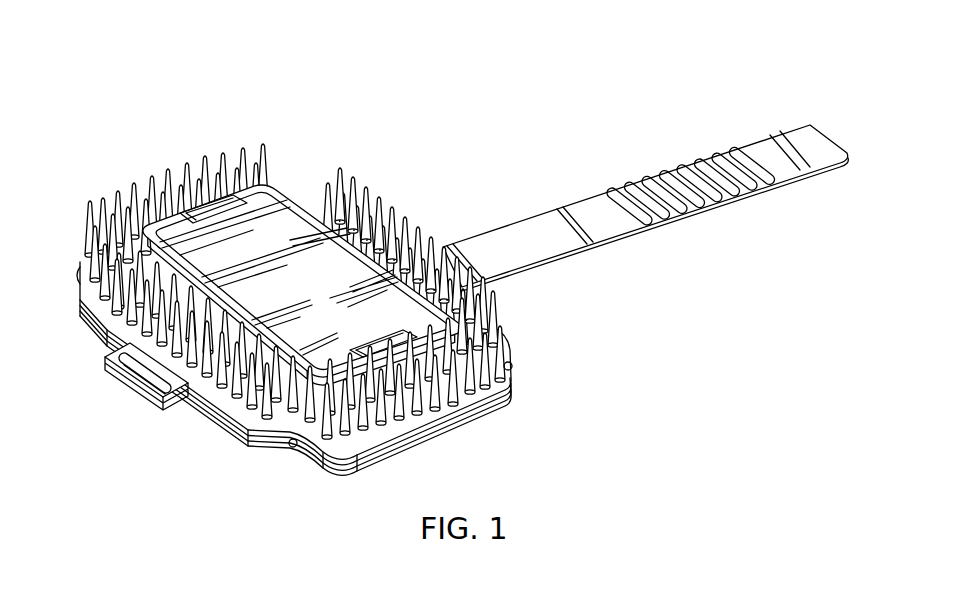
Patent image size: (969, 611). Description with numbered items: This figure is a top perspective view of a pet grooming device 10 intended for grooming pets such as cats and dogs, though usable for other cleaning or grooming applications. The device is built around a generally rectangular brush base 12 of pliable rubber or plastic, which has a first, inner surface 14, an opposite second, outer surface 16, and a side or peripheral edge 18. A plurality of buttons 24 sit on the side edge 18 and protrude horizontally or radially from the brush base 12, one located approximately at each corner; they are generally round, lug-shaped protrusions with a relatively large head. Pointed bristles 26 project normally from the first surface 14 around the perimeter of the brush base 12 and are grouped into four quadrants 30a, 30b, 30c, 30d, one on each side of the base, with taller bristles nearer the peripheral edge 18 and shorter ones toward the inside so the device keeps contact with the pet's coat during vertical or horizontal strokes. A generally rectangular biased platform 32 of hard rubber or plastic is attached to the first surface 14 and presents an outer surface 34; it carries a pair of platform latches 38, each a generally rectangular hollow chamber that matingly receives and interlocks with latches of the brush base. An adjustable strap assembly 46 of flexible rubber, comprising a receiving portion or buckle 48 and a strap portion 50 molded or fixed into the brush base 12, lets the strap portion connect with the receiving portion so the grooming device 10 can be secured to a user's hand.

The grooming device 10 is at (112, 85).
The brush base 12 is at (102, 322).
The first, inner surface 14 is at (233, 433).
The second, outer surface 16 is at (190, 402).
The side or peripheral edge 18 is at (513, 400).
The buttons 24 is at (78, 275).
The bristles 26 is at (204, 160).
The quadrant 30a is at (355, 196).
The quadrant 30b is at (157, 190).
The quadrant 30c is at (105, 357).
The quadrant 30d is at (413, 417).
The biased platform 32 is at (267, 200).
The outer surface 34 is at (140, 178).
The platform latches 38 is at (462, 320).
The adjustable strap assembly 46 is at (597, 200).
The receiving portion or buckle 48 is at (120, 378).
The strap portion 50 is at (733, 193).